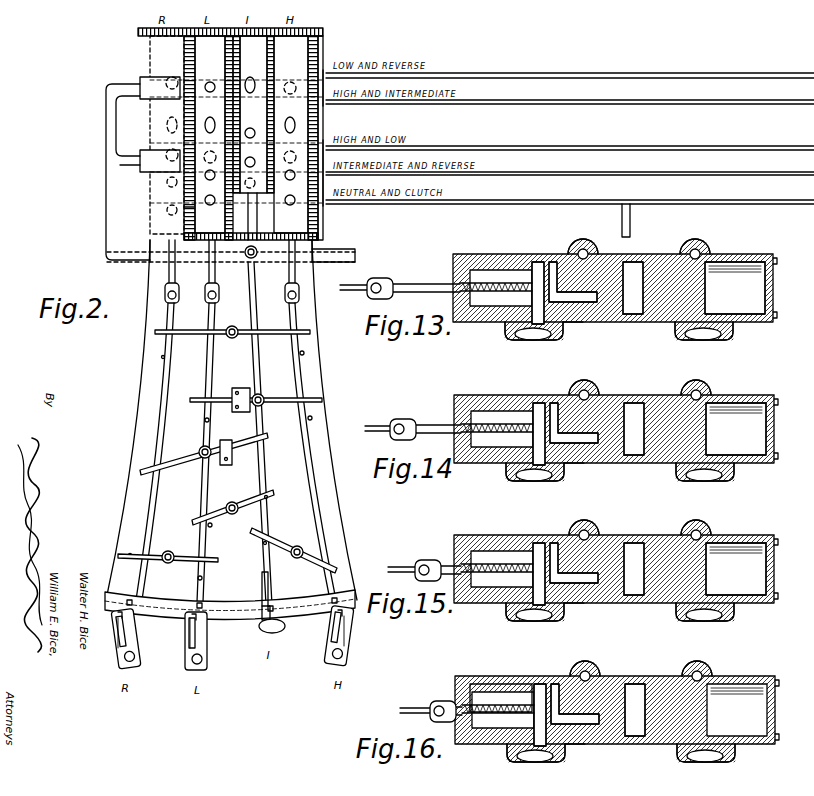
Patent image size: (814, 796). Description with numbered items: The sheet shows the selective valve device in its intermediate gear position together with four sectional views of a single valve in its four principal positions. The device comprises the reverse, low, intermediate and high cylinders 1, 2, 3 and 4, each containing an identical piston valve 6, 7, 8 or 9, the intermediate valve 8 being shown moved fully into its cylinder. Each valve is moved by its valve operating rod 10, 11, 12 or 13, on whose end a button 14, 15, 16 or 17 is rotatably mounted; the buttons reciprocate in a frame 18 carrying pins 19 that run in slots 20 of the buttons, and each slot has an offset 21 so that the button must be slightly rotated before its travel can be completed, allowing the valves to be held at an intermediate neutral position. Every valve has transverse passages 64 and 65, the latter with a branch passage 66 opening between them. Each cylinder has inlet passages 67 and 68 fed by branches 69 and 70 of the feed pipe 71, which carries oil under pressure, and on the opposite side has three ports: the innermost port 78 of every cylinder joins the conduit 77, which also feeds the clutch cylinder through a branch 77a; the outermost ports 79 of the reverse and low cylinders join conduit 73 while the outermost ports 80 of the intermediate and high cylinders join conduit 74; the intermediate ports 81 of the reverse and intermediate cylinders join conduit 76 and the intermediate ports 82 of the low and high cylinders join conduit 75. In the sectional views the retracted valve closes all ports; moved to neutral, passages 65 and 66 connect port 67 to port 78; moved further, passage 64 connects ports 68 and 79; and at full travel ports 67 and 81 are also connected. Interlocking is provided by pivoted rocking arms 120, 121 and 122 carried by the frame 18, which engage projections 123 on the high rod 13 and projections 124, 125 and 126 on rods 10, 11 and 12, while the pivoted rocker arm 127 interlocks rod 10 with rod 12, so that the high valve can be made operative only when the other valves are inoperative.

In FIG. 2, the reverse cylinder 1 is at (182, 56).
In FIG. 13, the reverse cylinder 1 is at (755, 262).
In FIG. 14, the reverse cylinder 1 is at (758, 403).
In FIG. 15, the reverse cylinder 1 is at (760, 543).
In FIG. 16, the reverse cylinder 1 is at (488, 684).
In FIG. 2, the low cylinder 2 is at (214, 138).
In FIG. 2, the intermediate cylinder 3 is at (246, 252).
In FIG. 2, the high cylinder 4 is at (296, 47).
In FIG. 2, the reverse piston valve 6 is at (185, 111).
In FIG. 2, the low piston valve 7 is at (210, 250).
In FIG. 2, the intermediate piston valve 8 is at (247, 44).
In FIG. 2, the high piston valve 9 is at (310, 116).
In FIG. 2, the reverse valve operating rod 10 is at (157, 387).
In FIG. 2, the low valve operating rod 11 is at (206, 376).
In FIG. 2, the intermediate valve operating rod 12 is at (262, 470).
In FIG. 2, the high valve operating rod 13 is at (325, 490).
In FIG. 2, the reverse button 14 is at (130, 660).
In FIG. 2, the low button 15 is at (204, 672).
In FIG. 2, the intermediate button 16 is at (260, 624).
In FIG. 2, the high gear button 17 is at (354, 656).
In FIG. 2, the frame 18 is at (230, 602).
In FIG. 2, the pins 19 is at (133, 602).
In FIG. 2, the slots 20 is at (128, 641).
In FIG. 2, the offset 21 is at (130, 620).
In FIG. 2, the transverse passage 64 is at (166, 126).
In FIG. 13, the transverse passage 64 is at (640, 262).
In FIG. 14, the transverse passage 64 is at (655, 403).
In FIG. 15, the transverse passage 64 is at (650, 543).
In FIG. 16, the transverse passage 64 is at (645, 684).
In FIG. 2, the transverse passage 65 is at (168, 212).
In FIG. 13, the transverse passage 65 is at (537, 262).
In FIG. 14, the transverse passage 65 is at (537, 403).
In FIG. 15, the transverse passage 65 is at (540, 543).
In FIG. 16, the transverse passage 65 is at (542, 684).
In FIG. 2, the branch passage 66 is at (175, 185).
In FIG. 13, the branch passage 66 is at (556, 262).
In FIG. 14, the branch passage 66 is at (600, 403).
In FIG. 15, the branch passage 66 is at (600, 543).
In FIG. 16, the branch passage 66 is at (600, 684).
In FIG. 13, the inlet passage 67 is at (583, 240).
In FIG. 14, the inlet passage 67 is at (590, 390).
In FIG. 15, the inlet passage 67 is at (590, 530).
In FIG. 16, the inlet passage 67 is at (588, 672).
In FIG. 13, the inlet passage 68 is at (697, 240).
In FIG. 14, the inlet passage 68 is at (700, 389).
In FIG. 15, the inlet passage 68 is at (700, 529).
In FIG. 16, the inlet passage 68 is at (700, 670).
In FIG. 2, the branch of feed pipe 69 is at (160, 172).
In FIG. 2, the branch of feed pipe 70 is at (122, 84).
In FIG. 2, the feed pipe 71 is at (355, 262).
In FIG. 2, the conduit 73 is at (637, 72).
In FIG. 2, the conduit 74 is at (656, 104).
In FIG. 2, the conduit 75 is at (708, 148).
In FIG. 2, the conduit 76 is at (682, 171).
In FIG. 2, the conduit 77 is at (744, 206).
In FIG. 2, the branch 77a is at (630, 222).
In FIG. 2, the innermost port 78 is at (186, 208).
In FIG. 13, the innermost port 78 is at (540, 332).
In FIG. 14, the innermost port 78 is at (540, 473).
In FIG. 15, the innermost port 78 is at (543, 613).
In FIG. 16, the innermost port 78 is at (520, 748).
In FIG. 2, the outermost port 79 is at (216, 73).
In FIG. 13, the outermost port 79 is at (690, 333).
In FIG. 14, the outermost port 79 is at (690, 474).
In FIG. 15, the outermost port 79 is at (690, 614).
In FIG. 16, the outermost port 79 is at (690, 754).
In FIG. 2, the outermost port 80 is at (292, 82).
In FIG. 2, the intermediate port 81 is at (223, 147).
In FIG. 13, the intermediate port 81 is at (575, 330).
In FIG. 14, the intermediate port 81 is at (576, 471).
In FIG. 15, the intermediate port 81 is at (576, 611).
In FIG. 16, the intermediate port 81 is at (578, 752).
In FIG. 2, the intermediate port 82 is at (246, 145).
In FIG. 2, the pivoted rocking arm 120 is at (188, 330).
In FIG. 2, the pivoted rocking arm 121 is at (280, 398).
In FIG. 2, the pivoted rocking arm 122 is at (290, 548).
In FIG. 2, the projections 123 is at (305, 353).
In FIG. 2, the projection 124 is at (160, 357).
In FIG. 2, the projection 125 is at (205, 421).
In FIG. 2, the projection 126 is at (262, 440).
In FIG. 2, the pivoted rocker arm 127 is at (178, 462).